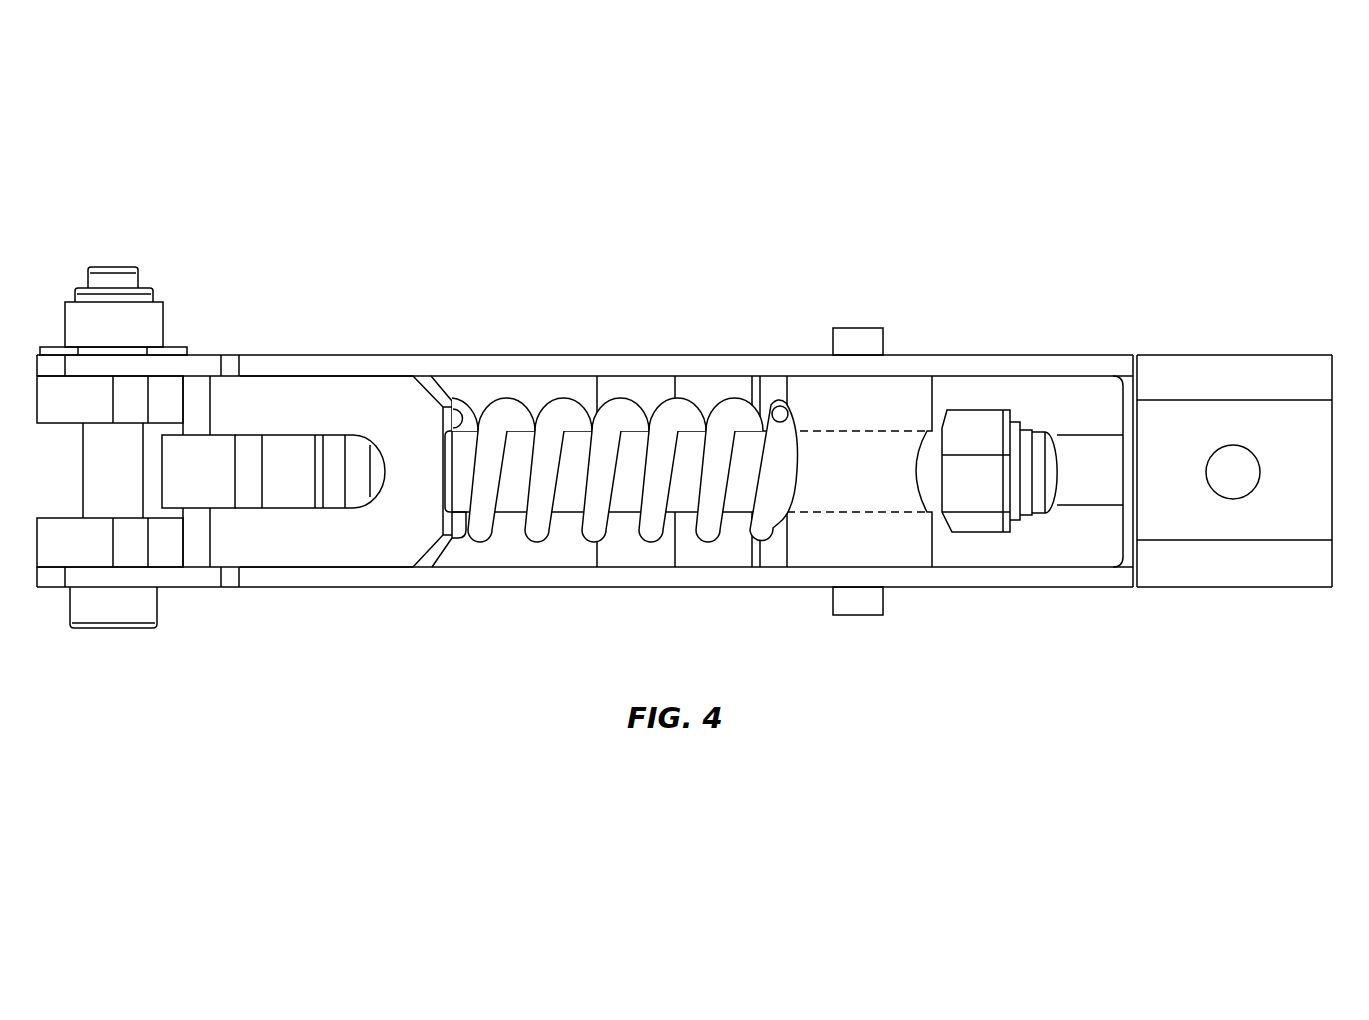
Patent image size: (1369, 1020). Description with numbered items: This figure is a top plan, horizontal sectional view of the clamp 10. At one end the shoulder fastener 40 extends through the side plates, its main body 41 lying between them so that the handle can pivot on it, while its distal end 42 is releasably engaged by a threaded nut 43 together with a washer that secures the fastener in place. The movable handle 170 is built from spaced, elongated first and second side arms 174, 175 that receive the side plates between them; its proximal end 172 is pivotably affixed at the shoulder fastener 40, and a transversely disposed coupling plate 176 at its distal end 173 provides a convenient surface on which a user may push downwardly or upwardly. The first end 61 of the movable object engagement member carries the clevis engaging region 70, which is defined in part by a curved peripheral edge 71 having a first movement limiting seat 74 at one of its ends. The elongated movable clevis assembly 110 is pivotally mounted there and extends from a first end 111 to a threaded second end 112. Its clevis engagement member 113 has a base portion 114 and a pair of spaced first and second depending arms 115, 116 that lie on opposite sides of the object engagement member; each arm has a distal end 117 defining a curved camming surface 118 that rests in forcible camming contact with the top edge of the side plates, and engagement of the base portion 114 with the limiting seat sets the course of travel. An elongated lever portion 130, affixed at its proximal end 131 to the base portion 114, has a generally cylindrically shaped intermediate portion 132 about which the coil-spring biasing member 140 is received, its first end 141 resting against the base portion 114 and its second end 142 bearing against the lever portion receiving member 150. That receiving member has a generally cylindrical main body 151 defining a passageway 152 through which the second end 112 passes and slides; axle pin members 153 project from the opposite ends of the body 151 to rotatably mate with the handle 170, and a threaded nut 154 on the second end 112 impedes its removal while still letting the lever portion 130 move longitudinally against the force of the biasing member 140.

The clamp 10 is at (1072, 168).
The shoulder fastener 40 is at (166, 604).
The main body of shoulder fastener 41 is at (95, 492).
The distal end of shoulder fastener 42 is at (112, 265).
The nut 43 is at (164, 318).
The first end of movable object engagement member 61 is at (195, 465).
The clevis engaging region 70 is at (357, 412).
The curved peripheral edge 71 is at (318, 443).
The first movement limiting seat 74 is at (285, 460).
The elongated movable clevis assembly 110 is at (690, 422).
The first end of clevis assembly 111 is at (195, 402).
The second end of clevis assembly 112 is at (1047, 428).
The clevis engagement member 113 is at (437, 392).
The base portion 114 is at (427, 455).
The first depending arm 115 is at (327, 550).
The second depending arm 116 is at (380, 392).
The distal end of arms 117 is at (223, 548).
The curved camming surface 118 is at (195, 537).
The elongated lever portion 130 is at (623, 492).
The proximal end of lever portion 131 is at (452, 492).
The cylindrically shaped intermediate portion 132 is at (683, 473).
The biasing member 140 is at (626, 385).
The first end of biasing member 141 is at (494, 434).
The second end of biasing member 142 is at (775, 428).
The lever portion receiving member 150 is at (917, 370).
The main body of receiving member 151 is at (888, 392).
The passageway 152 is at (812, 430).
The axle pin members 153 is at (855, 337).
The threaded nut 154 is at (978, 410).
The movable handle 170 is at (1120, 345).
The proximal end of handle 172 is at (75, 367).
The distal end of handle 173 is at (1333, 373).
The first side arm 174 is at (1008, 590).
The second side arm 175 is at (573, 354).
The coupling plate 176 is at (1283, 420).